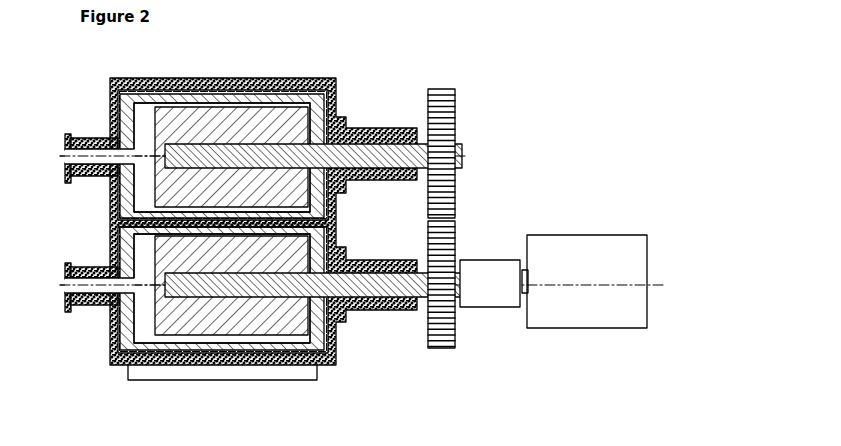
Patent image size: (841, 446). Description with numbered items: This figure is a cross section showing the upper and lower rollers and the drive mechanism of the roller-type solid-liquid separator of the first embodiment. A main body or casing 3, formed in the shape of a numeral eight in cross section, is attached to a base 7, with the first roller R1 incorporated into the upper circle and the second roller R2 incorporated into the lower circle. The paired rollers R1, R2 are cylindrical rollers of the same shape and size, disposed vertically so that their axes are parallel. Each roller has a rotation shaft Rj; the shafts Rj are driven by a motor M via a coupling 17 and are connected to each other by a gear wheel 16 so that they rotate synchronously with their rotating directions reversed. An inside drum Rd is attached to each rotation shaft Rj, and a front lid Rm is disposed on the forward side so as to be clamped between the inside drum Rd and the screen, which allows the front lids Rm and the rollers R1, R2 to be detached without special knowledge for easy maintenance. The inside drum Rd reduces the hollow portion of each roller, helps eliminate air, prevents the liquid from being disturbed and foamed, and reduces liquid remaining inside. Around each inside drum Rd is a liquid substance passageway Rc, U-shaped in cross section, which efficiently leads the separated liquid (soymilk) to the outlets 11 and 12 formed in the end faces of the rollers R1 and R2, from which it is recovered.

The main body (casing) 3 is at (328, 84).
The base 7 is at (318, 372).
The outlet 11 is at (84, 155).
The outlet 12 is at (84, 287).
The gear wheel 16 is at (455, 110).
The coupling 17 is at (485, 268).
The motor M is at (638, 251).
The first roller R1 is at (270, 92).
The second roller R2 is at (180, 350).
The passageway Rc is at (163, 100).
The inside drum Rd is at (225, 118).
The rotation shaft Rj is at (372, 143).
The front lid Rm is at (108, 212).